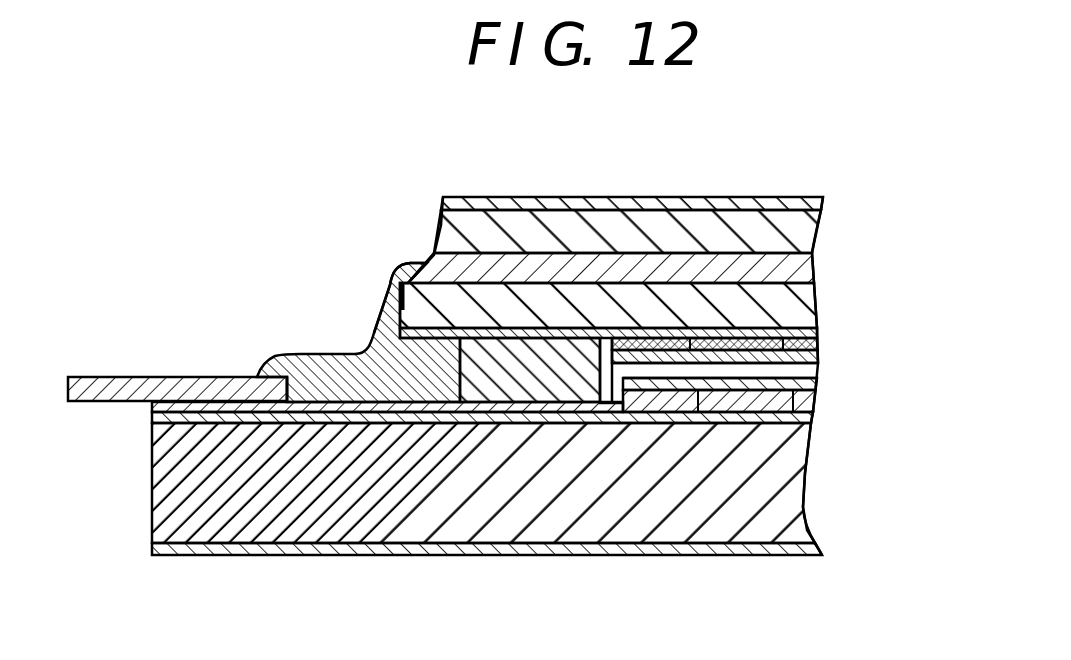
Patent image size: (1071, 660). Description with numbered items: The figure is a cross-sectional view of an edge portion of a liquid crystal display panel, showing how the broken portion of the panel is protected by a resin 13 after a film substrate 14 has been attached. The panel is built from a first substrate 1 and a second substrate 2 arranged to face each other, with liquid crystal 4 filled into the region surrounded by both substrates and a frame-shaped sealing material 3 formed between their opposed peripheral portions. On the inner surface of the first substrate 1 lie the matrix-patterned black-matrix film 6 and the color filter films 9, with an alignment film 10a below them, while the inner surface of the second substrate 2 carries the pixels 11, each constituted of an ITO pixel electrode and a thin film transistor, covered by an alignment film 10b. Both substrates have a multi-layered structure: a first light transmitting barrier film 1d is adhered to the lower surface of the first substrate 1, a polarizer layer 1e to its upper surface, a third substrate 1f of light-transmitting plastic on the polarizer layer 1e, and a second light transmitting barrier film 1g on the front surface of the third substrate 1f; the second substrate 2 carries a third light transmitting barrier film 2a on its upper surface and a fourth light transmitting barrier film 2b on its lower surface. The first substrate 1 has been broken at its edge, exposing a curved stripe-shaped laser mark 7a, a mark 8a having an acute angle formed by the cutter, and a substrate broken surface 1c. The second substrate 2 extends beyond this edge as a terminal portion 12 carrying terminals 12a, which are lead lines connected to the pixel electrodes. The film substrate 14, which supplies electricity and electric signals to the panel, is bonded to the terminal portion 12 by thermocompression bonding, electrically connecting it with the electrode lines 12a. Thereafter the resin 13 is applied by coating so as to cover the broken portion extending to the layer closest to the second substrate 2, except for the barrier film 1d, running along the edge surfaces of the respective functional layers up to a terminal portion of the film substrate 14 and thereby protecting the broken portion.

The first substrate 1 is at (537, 293).
The substrate broken surface 1c is at (383, 318).
The first light transmitting barrier film 1d is at (467, 268).
The polarizer layer 1e is at (640, 240).
The third substrate 1f is at (695, 218).
The second light transmitting barrier film 1g is at (821, 200).
The second substrate 2 is at (715, 527).
The third light transmitting barrier film 2a is at (152, 420).
The fourth light transmitting barrier film 2b is at (152, 548).
The sealing material 3 is at (547, 380).
The liquid crystal 4 is at (810, 387).
The black-matrix film 6 is at (807, 343).
The laser mark 7a is at (436, 237).
The mark having an acute angle 8a is at (389, 276).
The color filter films 9 is at (790, 315).
The alignment film 10a is at (807, 373).
The alignment film 10b is at (808, 410).
The pixels 11 is at (805, 480).
The terminal portion 12 is at (305, 351).
The terminals 12a is at (152, 409).
The resin 13 is at (323, 392).
The film substrate 14 is at (182, 377).